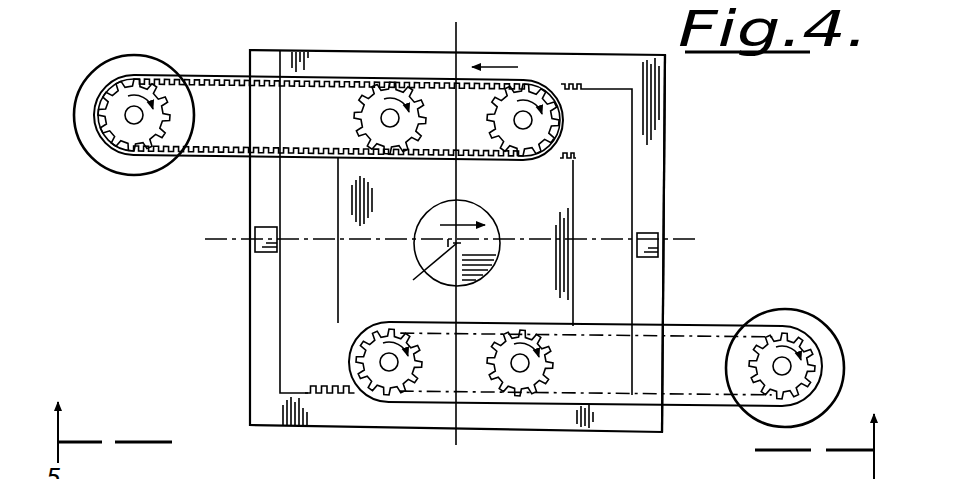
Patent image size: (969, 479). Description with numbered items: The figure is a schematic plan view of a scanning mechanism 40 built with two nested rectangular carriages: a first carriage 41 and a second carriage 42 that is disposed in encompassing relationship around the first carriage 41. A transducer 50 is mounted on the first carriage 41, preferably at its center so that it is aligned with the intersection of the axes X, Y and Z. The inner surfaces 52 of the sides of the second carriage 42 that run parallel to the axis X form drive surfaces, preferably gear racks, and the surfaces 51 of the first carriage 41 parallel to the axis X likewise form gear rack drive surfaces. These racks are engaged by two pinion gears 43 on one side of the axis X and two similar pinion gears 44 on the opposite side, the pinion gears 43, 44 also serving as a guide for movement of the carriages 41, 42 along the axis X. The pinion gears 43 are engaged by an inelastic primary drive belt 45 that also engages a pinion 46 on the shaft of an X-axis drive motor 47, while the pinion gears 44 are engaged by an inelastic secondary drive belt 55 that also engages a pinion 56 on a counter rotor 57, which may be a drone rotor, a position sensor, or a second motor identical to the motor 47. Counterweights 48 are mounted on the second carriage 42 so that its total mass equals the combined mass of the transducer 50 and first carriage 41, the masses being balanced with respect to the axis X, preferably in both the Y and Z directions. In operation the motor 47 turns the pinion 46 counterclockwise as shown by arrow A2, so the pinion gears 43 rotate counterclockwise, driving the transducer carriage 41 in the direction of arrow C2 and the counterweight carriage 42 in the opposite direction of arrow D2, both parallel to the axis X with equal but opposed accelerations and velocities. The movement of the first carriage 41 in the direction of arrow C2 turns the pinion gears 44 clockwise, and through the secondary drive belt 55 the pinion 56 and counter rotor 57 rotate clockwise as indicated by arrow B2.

The scanning mechanism 40 is at (690, 206).
The first carriage 41 is at (575, 276).
The second carriage 42 is at (666, 104).
The pinion gears 43 is at (488, 119).
The pinion gears 44 is at (487, 362).
The primary drive belt 45 is at (220, 76).
The pinion 46 is at (171, 117).
The X-axis drive motor 47 is at (105, 58).
The counterweights 48 is at (260, 252).
The transducer 50 is at (470, 283).
The drive surfaces 51 is at (572, 157).
The drive surfaces 52 is at (588, 91).
The secondary drive belt 55 is at (696, 406).
The pinion 56 is at (752, 366).
The counter rotor 57 is at (800, 318).
The arrow A2 is at (105, 118).
The arrow B2 is at (798, 360).
The arrow C2 is at (468, 215).
The arrow D2 is at (505, 64).
The X axis X is at (233, 238).
The Y axis Y is at (455, 38).
The Z axis Z is at (422, 270).